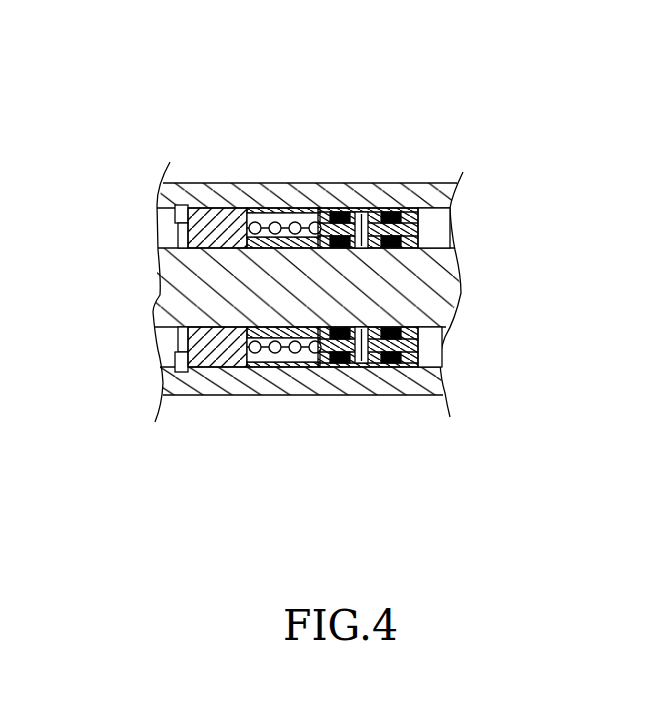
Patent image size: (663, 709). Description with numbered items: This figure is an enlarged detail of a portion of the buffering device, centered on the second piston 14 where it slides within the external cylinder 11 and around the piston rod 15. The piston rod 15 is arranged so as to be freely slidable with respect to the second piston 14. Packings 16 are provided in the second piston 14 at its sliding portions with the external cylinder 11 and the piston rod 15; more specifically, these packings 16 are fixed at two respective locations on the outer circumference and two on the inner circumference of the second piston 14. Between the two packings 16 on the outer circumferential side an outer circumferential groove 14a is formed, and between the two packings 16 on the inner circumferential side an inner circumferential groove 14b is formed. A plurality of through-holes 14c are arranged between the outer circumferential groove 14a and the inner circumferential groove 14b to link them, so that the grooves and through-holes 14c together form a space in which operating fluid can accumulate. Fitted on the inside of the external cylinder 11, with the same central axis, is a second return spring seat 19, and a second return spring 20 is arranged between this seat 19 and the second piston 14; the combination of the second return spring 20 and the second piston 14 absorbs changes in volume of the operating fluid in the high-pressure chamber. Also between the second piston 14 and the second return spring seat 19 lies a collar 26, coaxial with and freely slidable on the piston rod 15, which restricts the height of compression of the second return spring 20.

The external cylinder 11 is at (188, 390).
The second piston 14 is at (396, 373).
The outer circumferential groove 14a is at (368, 247).
The inner circumferential groove 14b is at (368, 248).
The through-holes 14c is at (405, 237).
The piston rod 15 is at (185, 297).
The packings 16 is at (313, 208).
The second return spring seat 19 is at (224, 367).
The second return spring 20 is at (287, 353).
The collar 26 is at (284, 210).